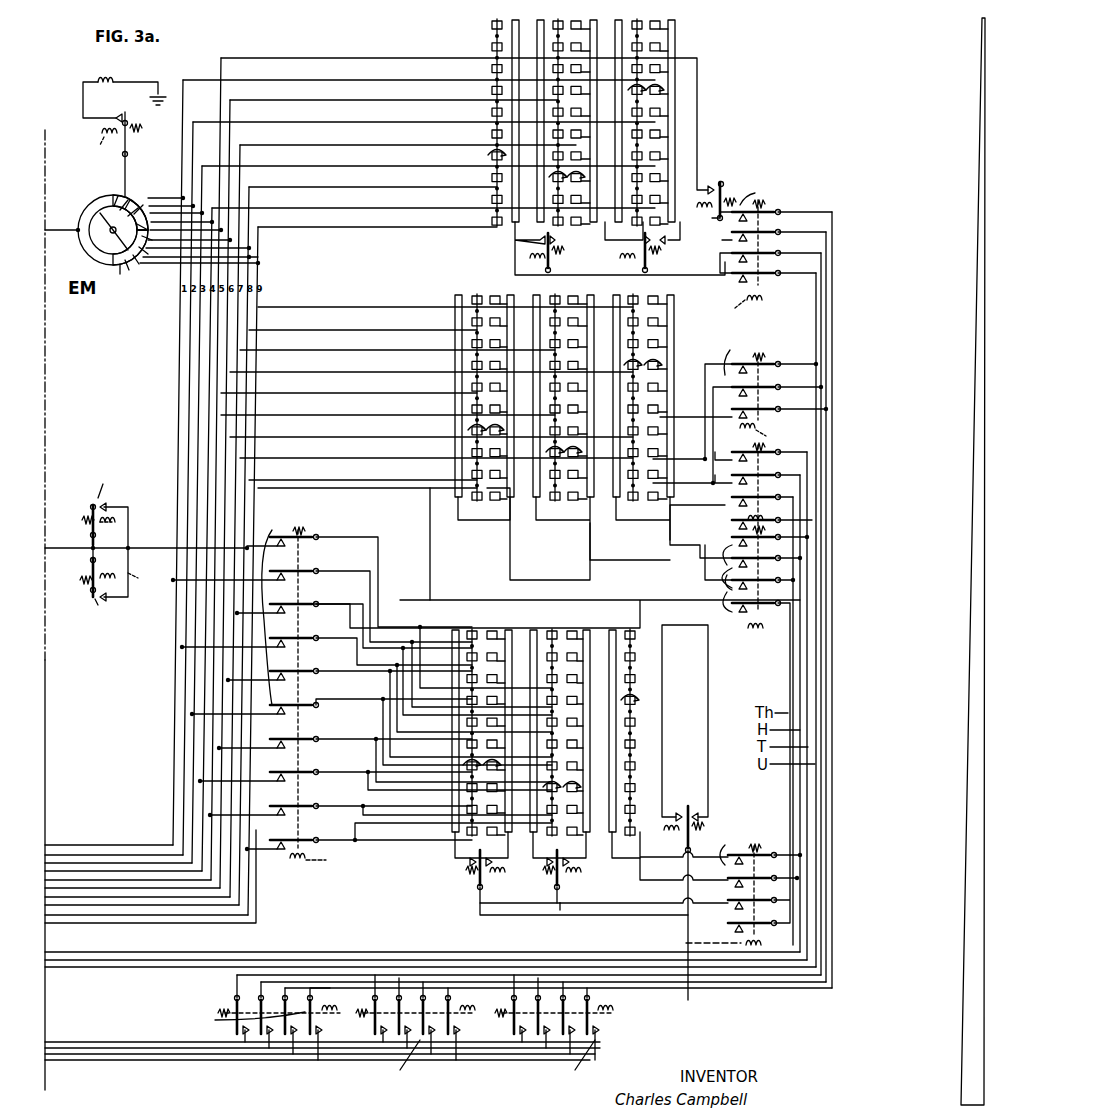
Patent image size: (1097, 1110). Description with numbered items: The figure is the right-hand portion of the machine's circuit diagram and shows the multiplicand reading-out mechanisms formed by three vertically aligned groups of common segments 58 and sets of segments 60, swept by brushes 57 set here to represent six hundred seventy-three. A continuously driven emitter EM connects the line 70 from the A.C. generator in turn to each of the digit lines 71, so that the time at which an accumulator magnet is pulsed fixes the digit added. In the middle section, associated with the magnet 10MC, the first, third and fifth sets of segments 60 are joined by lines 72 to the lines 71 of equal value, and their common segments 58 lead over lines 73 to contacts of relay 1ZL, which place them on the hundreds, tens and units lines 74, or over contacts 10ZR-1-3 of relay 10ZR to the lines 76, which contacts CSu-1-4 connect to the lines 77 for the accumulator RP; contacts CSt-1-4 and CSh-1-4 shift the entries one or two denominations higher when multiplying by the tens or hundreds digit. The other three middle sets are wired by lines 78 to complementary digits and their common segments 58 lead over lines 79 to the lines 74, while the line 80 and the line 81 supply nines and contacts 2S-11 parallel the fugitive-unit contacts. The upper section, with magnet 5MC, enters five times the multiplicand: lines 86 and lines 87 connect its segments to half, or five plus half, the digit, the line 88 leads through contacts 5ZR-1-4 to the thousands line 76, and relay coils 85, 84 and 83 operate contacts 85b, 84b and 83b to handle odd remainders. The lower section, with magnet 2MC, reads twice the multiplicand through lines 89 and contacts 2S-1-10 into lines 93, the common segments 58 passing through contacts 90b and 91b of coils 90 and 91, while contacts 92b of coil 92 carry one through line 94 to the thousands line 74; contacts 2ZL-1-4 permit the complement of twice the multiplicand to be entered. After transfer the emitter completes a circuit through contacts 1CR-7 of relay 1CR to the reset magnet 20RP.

The reset magnet 20RP is at (126, 80).
The contacts 1CR-7 is at (120, 114).
The relay 1CR is at (97, 149).
The line 70 is at (60, 228).
The lines 71 is at (198, 271).
The lines 87 is at (330, 100).
The lines 86 is at (360, 167).
The magnet MC of the five-times section 5MC is at (553, 116).
The segments 60 is at (495, 94).
The common segments 58 is at (505, 486).
The brushes 57 is at (660, 84).
The line 88 is at (510, 262).
The relay coil 85 is at (542, 262).
The relay contacts 85b is at (568, 264).
The relay coil 84 is at (620, 254).
The relay contacts 84b is at (650, 254).
The relay coil 83 is at (700, 220).
The relay contacts 83b is at (712, 184).
The relay contacts 5ZR-1-4 is at (774, 252).
The lines 76 is at (832, 312).
The relay contacts 10ZR-1-3 is at (740, 408).
The relay 10ZR is at (763, 486).
The relay 1ZL is at (730, 680).
The lines 78 is at (321, 398).
The lines 72 is at (373, 408).
The magnet MC of the middle section 10MC is at (549, 411).
The lines 73 is at (658, 520).
The lines 79 is at (586, 590).
The line 80 is at (540, 622).
The contacts 2S-11 is at (115, 505).
The line 81 is at (65, 553).
The contacts 2S-1-10 is at (259, 688).
The lines 89 is at (394, 648).
The magnet MC of the two-times section 2MC is at (542, 727).
The line 94 is at (662, 770).
The contacts 92b is at (688, 793).
The operating coil 92 is at (674, 922).
The relay contacts 2ZL-1-4 is at (681, 890).
The contacts 91b is at (470, 868).
The operating coil 91 is at (496, 880).
The contacts 90b is at (555, 868).
The operating coil 90 is at (584, 878).
The lines 93 is at (633, 895).
The lines 74 is at (352, 965).
The relay contacts CSh-1-4 is at (248, 1017).
The relay contacts CSt-1-4 is at (418, 1032).
The relay contacts CSu-1-4 is at (562, 1032).
The lines 77 is at (122, 1053).